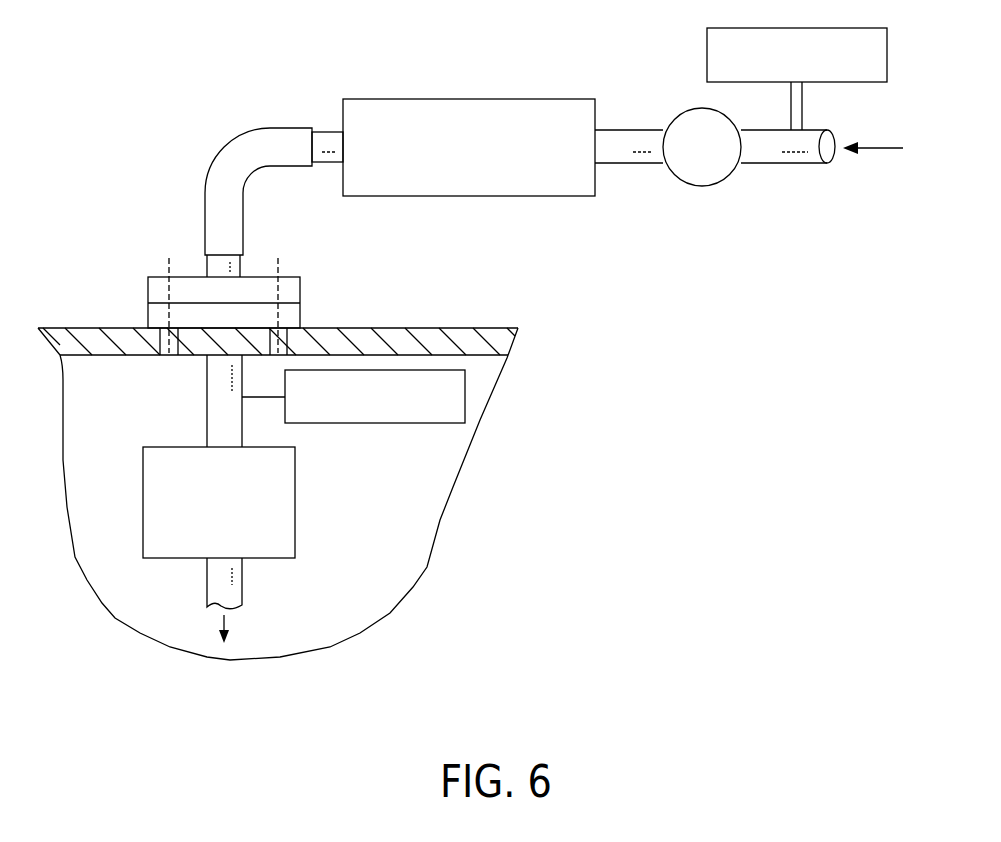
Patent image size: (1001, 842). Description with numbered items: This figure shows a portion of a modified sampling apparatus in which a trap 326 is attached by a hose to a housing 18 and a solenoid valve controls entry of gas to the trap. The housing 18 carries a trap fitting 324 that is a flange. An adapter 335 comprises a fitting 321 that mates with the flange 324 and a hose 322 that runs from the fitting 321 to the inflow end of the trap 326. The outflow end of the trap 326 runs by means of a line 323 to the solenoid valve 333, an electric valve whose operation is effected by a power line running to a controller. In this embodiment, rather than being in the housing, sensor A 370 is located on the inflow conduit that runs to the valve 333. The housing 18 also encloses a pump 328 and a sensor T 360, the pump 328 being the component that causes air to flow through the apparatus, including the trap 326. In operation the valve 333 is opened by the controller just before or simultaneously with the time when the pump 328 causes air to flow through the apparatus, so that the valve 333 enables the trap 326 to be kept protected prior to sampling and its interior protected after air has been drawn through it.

The housing 18 is at (490, 327).
The fitting 321 is at (158, 283).
The hose 322 is at (214, 197).
The line 323 is at (633, 130).
The trap fitting 324 is at (302, 320).
The trap 326 is at (500, 196).
The pump 328 is at (297, 500).
The solenoid valve 333 is at (703, 187).
The adapter 335 is at (215, 99).
The sensor T 360 is at (465, 405).
The sensor A 370 is at (887, 52).